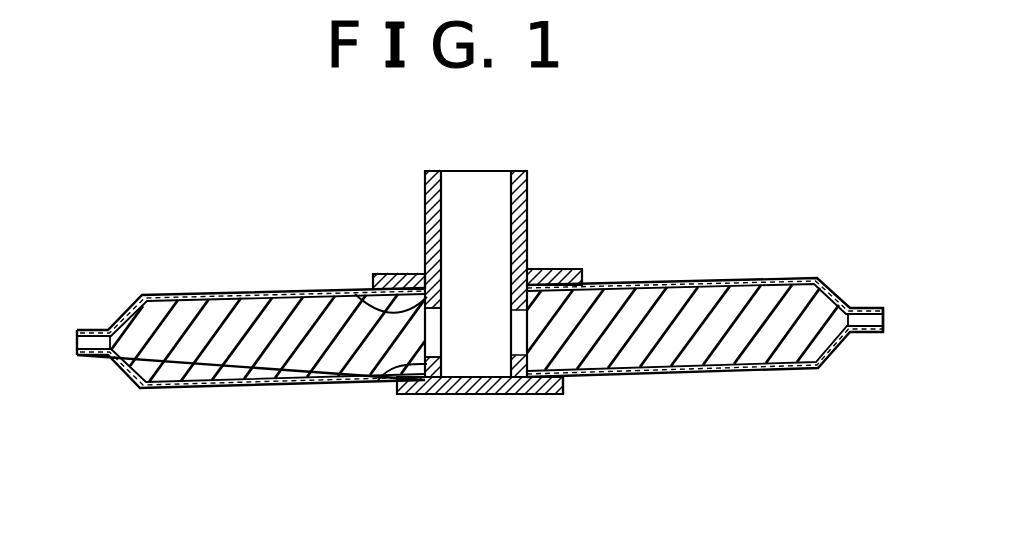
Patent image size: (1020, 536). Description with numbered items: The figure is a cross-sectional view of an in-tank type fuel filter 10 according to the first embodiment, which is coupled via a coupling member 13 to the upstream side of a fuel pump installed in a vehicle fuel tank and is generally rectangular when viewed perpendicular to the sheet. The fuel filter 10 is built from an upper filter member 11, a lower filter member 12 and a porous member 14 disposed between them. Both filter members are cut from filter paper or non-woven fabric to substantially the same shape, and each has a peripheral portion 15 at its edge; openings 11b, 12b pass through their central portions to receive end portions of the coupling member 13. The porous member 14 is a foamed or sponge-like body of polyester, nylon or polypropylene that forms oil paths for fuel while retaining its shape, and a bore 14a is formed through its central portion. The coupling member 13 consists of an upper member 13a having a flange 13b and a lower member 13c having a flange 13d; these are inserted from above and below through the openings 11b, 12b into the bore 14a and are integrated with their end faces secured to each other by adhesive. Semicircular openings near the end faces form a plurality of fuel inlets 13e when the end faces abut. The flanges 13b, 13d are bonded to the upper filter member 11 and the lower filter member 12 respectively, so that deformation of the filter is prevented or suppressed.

The fuel filter 10 is at (762, 277).
The upper filter member 11 is at (203, 290).
The opening 11b is at (422, 275).
The lower filter member 12 is at (183, 387).
The opening 12b is at (393, 373).
The coupling member 13 is at (528, 193).
The upper member 13a is at (528, 242).
The flange 13b is at (563, 270).
The lower member 13c is at (512, 378).
The flange 13d is at (558, 395).
The fuel inlets 13e is at (441, 332).
The porous member 14 is at (283, 343).
The bore 14a is at (348, 290).
The peripheral portion 15 is at (97, 333).